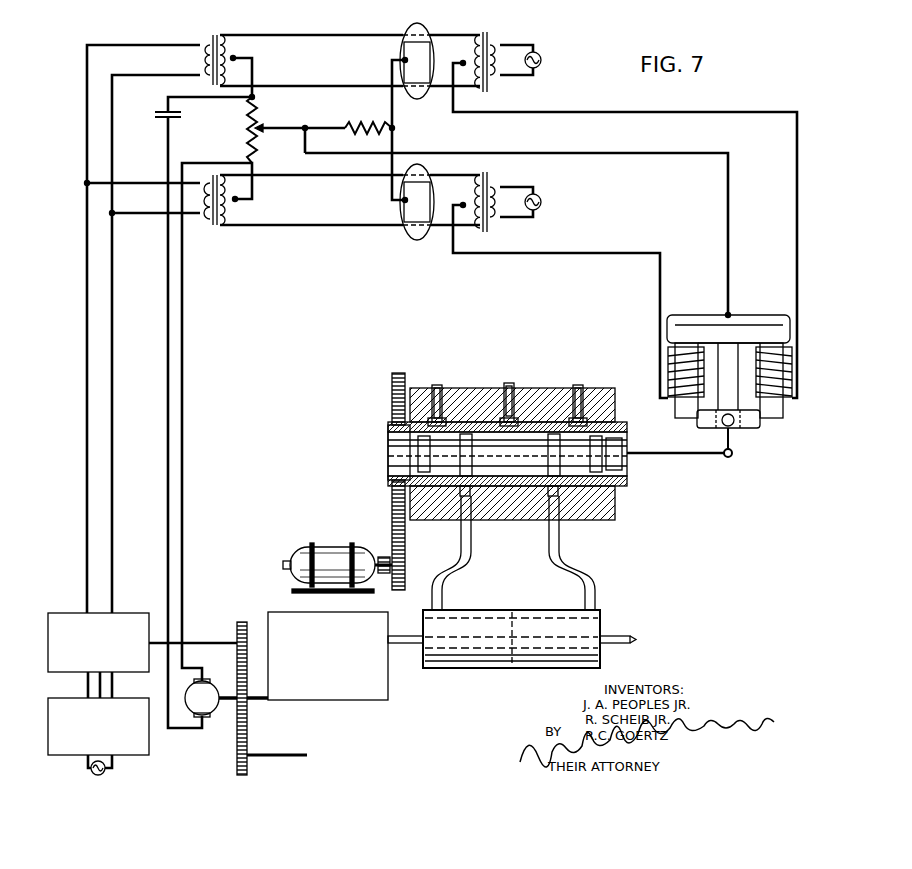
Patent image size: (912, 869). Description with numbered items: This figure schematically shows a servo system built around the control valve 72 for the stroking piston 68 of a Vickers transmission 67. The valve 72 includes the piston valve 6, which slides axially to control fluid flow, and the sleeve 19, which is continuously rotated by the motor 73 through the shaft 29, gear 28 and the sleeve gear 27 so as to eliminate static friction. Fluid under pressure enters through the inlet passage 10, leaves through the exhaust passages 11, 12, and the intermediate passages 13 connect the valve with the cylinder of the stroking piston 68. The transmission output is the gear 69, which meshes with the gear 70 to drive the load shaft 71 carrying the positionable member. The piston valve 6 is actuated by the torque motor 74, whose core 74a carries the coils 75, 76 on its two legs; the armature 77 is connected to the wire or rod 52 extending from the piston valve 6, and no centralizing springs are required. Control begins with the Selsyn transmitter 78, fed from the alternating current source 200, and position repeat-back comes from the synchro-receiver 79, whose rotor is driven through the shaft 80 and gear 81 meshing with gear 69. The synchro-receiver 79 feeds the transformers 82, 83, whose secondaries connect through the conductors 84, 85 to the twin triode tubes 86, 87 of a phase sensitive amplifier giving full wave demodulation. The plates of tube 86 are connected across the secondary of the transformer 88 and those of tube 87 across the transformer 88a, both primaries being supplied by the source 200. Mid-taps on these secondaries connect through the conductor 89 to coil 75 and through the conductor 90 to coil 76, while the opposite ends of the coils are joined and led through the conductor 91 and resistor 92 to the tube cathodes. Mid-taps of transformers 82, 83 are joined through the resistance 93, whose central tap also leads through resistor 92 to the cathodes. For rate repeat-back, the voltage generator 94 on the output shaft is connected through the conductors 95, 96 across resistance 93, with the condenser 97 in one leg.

The transformer 82 is at (213, 46).
The transformer 83 is at (212, 226).
The conductor 84 is at (328, 84).
The conductor 85 is at (336, 224).
The twin triode tube 86 is at (402, 30).
The twin triode tube 87 is at (404, 234).
The transformer 88 is at (486, 42).
The transformer 88a is at (487, 186).
The source of alternating current 200 is at (538, 64).
The condenser 97 is at (178, 115).
The resistance 93 is at (257, 126).
The resistor 92 is at (345, 126).
The conductor 89 is at (714, 113).
The conductor 90 is at (627, 253).
The conductor 91 is at (727, 186).
The conductor 95 is at (166, 299).
The conductor 96 is at (183, 299).
The torque motor 74 is at (732, 375).
The core 74a is at (715, 328).
The coil 75 is at (774, 364).
The coil 76 is at (686, 364).
The armature 77 is at (744, 430).
The wire or rod 52 is at (668, 440).
The valve 72 is at (489, 388).
The sleeve 19 is at (530, 422).
The piston valve 6 is at (491, 458).
The inlet passage 10 is at (508, 388).
The exhaust passage 11 is at (580, 388).
The exhaust passage 12 is at (434, 388).
The intermediate passages 13 is at (548, 500).
The gear 27 is at (392, 513).
The gear 28 is at (406, 554).
The shaft 29 is at (385, 556).
The motor 73 is at (342, 546).
The stroking piston 68 is at (502, 666).
The transmission 67 is at (389, 686).
The synchro-receiver 79 is at (46, 625).
The Selsyn transmitter 78 is at (46, 708).
The shaft 80 is at (214, 642).
The gear 81 is at (242, 620).
The gear 69 is at (236, 676).
The voltage generator 94 is at (216, 717).
The gear 70 is at (250, 754).
The load shaft 71 is at (290, 754).